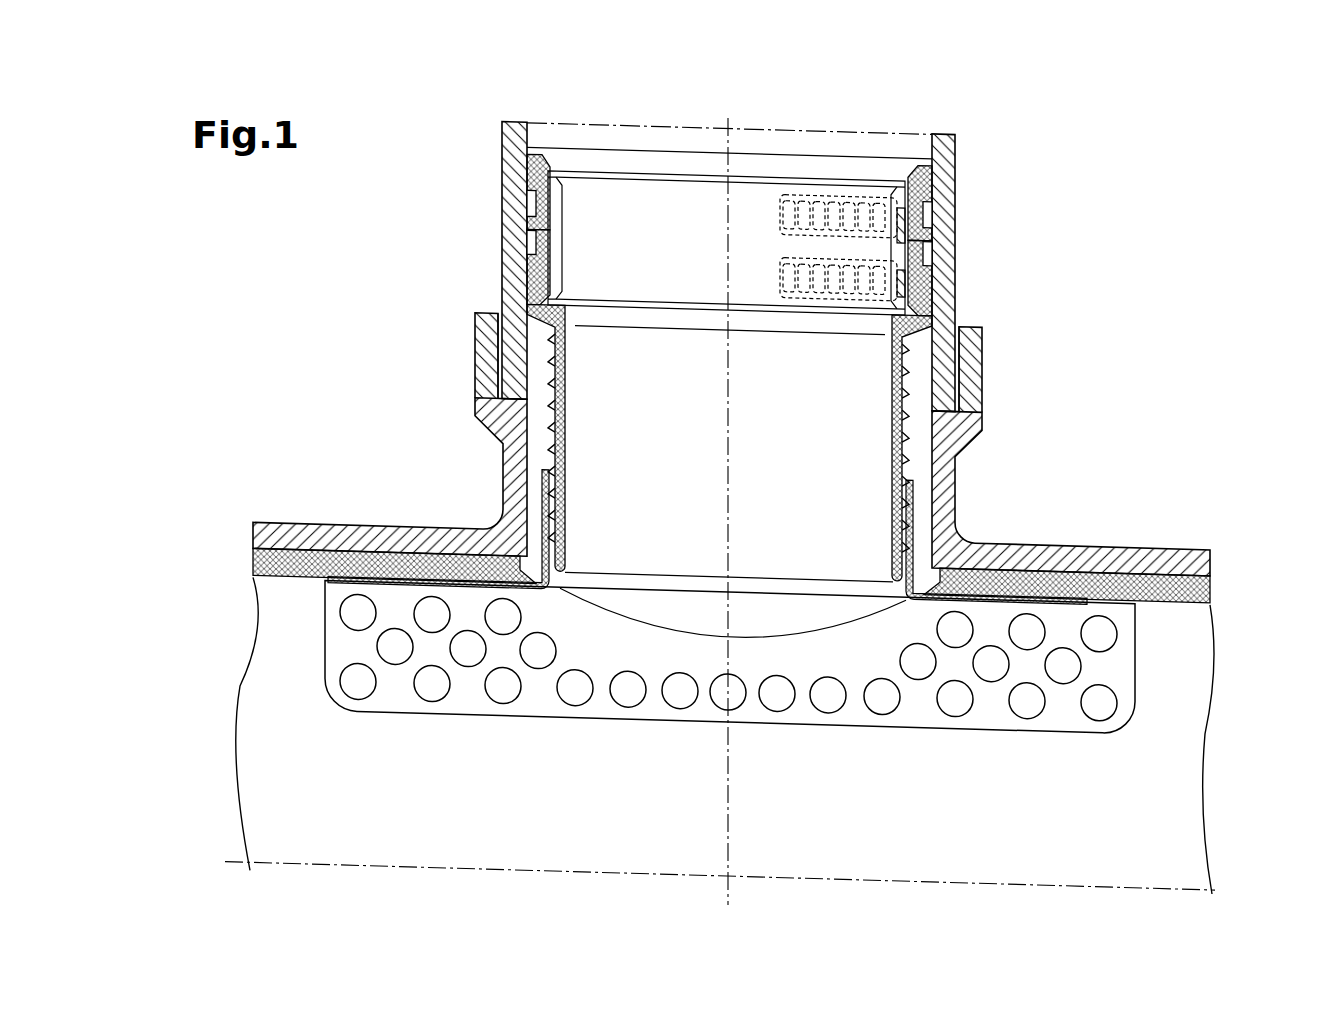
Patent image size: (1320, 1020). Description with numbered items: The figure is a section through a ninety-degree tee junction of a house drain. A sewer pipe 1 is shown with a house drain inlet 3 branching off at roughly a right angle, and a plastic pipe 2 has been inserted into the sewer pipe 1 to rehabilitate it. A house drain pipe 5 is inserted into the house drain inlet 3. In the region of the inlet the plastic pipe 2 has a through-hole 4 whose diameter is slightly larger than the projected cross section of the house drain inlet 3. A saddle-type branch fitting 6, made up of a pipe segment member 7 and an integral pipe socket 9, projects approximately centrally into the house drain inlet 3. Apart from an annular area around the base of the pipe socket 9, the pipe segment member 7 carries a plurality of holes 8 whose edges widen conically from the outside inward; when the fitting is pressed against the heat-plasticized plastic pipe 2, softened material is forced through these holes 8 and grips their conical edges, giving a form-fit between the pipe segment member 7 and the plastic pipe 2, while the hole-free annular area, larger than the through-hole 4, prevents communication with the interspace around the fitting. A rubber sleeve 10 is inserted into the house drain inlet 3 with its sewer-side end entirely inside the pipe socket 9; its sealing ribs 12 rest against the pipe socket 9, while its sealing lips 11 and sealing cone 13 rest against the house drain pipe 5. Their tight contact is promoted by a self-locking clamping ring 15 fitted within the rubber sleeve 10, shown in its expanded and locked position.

The sewer pipe 1 is at (290, 533).
The plastic pipe 2 is at (457, 568).
The house drain inlet 3 is at (592, 103).
The through-hole 4 is at (768, 617).
The house drain pipe 5 is at (946, 349).
The saddle-type branch fitting 6 is at (1136, 735).
The pipe segment member 7 is at (338, 641).
The holes 8 is at (356, 682).
The pipe socket 9 is at (543, 490).
The rubber sleeve 10 is at (935, 268).
The sealing lips 11 is at (935, 203).
The sealing ribs 12 is at (903, 447).
The sealing cone 13 is at (905, 135).
The clamping ring 15 is at (658, 260).